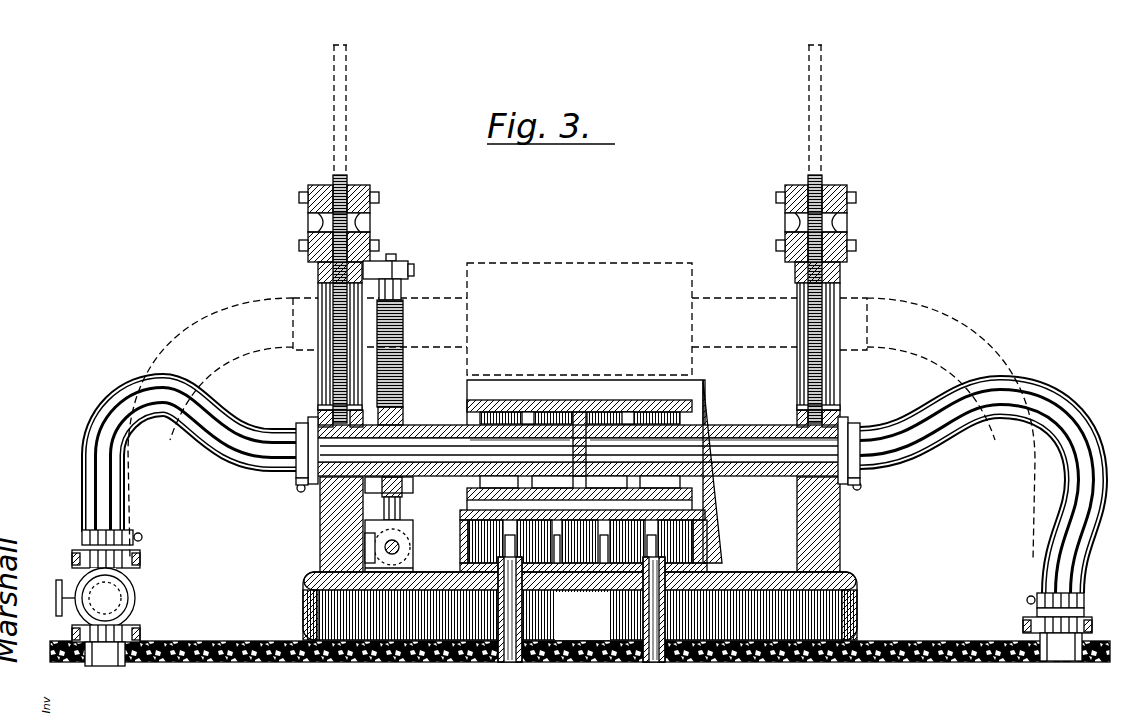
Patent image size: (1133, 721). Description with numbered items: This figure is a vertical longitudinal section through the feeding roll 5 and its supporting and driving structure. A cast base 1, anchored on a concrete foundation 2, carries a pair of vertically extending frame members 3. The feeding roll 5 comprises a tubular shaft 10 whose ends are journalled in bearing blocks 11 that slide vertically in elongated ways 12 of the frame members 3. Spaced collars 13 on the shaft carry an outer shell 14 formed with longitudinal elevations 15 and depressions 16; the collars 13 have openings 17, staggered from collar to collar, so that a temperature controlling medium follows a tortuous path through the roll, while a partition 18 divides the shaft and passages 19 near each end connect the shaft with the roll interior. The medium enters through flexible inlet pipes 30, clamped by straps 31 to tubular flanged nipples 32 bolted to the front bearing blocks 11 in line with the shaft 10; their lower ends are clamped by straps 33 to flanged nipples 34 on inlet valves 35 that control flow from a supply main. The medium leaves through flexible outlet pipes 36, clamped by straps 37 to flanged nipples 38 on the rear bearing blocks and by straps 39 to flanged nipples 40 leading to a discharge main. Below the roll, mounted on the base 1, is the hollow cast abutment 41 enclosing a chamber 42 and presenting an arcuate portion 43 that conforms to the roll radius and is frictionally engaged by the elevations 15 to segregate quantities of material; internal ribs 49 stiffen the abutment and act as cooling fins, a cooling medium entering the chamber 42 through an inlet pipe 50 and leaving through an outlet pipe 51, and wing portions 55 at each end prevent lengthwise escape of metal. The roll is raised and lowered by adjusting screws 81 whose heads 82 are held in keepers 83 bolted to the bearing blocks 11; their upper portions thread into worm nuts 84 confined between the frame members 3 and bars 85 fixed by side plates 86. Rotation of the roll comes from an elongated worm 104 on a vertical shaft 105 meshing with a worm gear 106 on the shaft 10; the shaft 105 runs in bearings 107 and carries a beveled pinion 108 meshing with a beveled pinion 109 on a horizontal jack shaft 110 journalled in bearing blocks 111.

The base 1 is at (312, 600).
The concrete foundation 2 is at (205, 641).
The frame member 3 is at (320, 270).
The feeding roll 5 is at (577, 264).
The tubular shaft 10 is at (430, 430).
The bearing block 11 is at (310, 424).
The elongated way 12 is at (326, 300).
The collar 13 is at (520, 410).
The outer shell 14 is at (533, 410).
The elevation 15 is at (567, 400).
The depression 16 is at (600, 400).
The opening 17 is at (630, 410).
The partition 18 is at (587, 452).
The passage 19 is at (655, 451).
The flexible inlet pipe 30 is at (118, 405).
The clamping strap 31 is at (278, 488).
The tubular flanged nipple 32 is at (303, 486).
The clamping strap 33 is at (130, 537).
The flanged nipple 34 is at (142, 560).
The inlet valve 35 is at (125, 602).
The flexible outlet pipe 36 is at (1045, 398).
The clamping strap 37 is at (878, 484).
The flanged nipple 38 is at (855, 482).
The clamping strap 39 is at (1035, 598).
The flanged nipple 40 is at (1030, 624).
The abutment 41 is at (705, 514).
The chamber 42 is at (700, 532).
The arcuate portion 43 is at (580, 541).
The internal rib 49 is at (604, 570).
The inlet pipe 50 is at (510, 664).
The outlet pipe 51 is at (654, 664).
The wing portion 55 is at (702, 496).
The adjusting screw 81 is at (337, 182).
The head 82 is at (326, 406).
The keeper 83 is at (322, 416).
The worm nut 84 is at (310, 224).
The bar 85 is at (310, 192).
The side plate 86 is at (306, 210).
The elongated worm 104 is at (404, 338).
The vertically extending shaft 105 is at (393, 256).
The worm gear 106 is at (405, 416).
The bearing 107 is at (402, 268).
The beveled pinion 108 is at (402, 508).
The beveled pinion 109 is at (405, 540).
The jack shaft 110 is at (385, 550).
The bearing block 111 is at (370, 568).